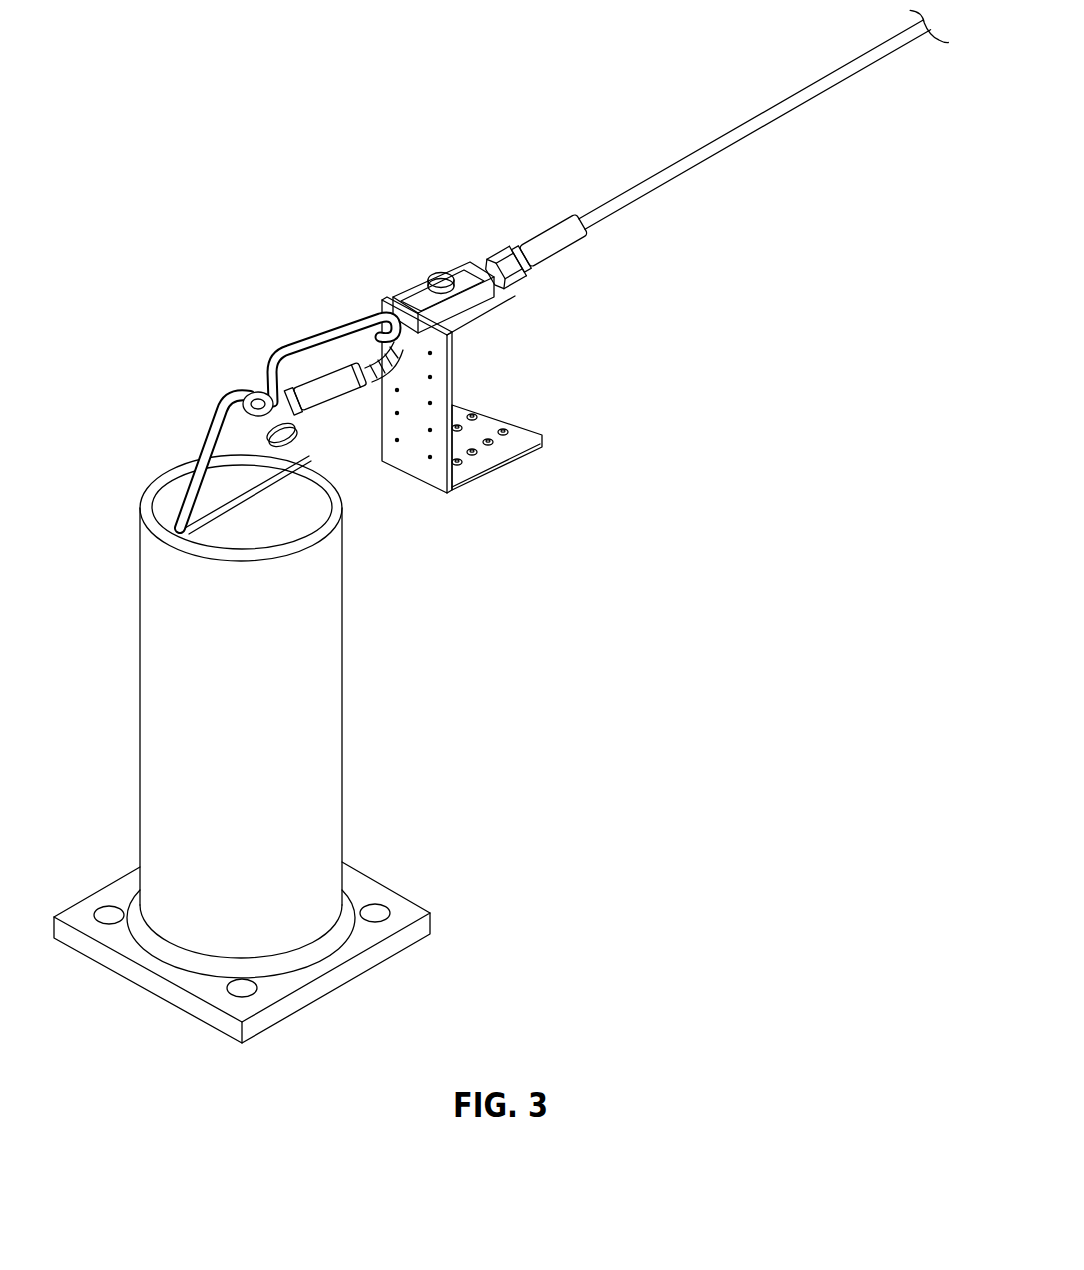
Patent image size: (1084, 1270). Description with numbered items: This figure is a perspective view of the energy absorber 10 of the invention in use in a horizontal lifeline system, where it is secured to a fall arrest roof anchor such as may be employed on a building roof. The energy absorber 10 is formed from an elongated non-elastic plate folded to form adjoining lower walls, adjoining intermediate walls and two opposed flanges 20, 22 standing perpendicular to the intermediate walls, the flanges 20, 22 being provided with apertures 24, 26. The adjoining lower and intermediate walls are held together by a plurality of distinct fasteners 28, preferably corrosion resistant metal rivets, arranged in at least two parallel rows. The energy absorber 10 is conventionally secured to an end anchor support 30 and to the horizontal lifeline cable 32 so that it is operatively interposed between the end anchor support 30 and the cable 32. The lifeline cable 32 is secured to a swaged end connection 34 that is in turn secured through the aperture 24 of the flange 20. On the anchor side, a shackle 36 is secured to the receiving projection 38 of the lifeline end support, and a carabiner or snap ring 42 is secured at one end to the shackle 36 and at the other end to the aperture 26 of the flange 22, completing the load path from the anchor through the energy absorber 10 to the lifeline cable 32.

The energy absorber 10 is at (469, 341).
The flange 20 is at (474, 306).
The flange 22 is at (423, 336).
The aperture 24 is at (408, 298).
The aperture 26 is at (367, 403).
The fasteners 28 is at (473, 416).
The end anchor support 30 is at (152, 763).
The horizontal lifeline cable 32 is at (713, 137).
The swaged end connection 34 is at (542, 221).
The shackle 36 is at (258, 384).
The receiving projection 38 is at (223, 455).
The carabiner or snap ring 42 is at (309, 342).